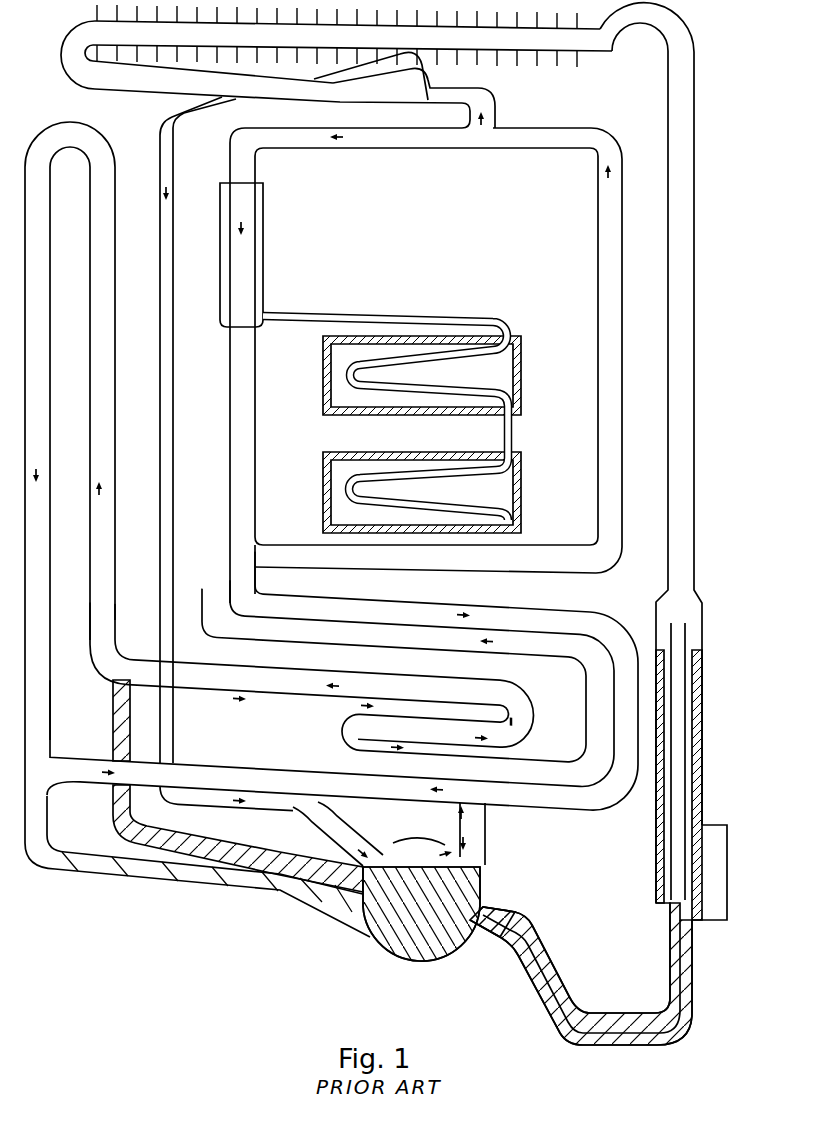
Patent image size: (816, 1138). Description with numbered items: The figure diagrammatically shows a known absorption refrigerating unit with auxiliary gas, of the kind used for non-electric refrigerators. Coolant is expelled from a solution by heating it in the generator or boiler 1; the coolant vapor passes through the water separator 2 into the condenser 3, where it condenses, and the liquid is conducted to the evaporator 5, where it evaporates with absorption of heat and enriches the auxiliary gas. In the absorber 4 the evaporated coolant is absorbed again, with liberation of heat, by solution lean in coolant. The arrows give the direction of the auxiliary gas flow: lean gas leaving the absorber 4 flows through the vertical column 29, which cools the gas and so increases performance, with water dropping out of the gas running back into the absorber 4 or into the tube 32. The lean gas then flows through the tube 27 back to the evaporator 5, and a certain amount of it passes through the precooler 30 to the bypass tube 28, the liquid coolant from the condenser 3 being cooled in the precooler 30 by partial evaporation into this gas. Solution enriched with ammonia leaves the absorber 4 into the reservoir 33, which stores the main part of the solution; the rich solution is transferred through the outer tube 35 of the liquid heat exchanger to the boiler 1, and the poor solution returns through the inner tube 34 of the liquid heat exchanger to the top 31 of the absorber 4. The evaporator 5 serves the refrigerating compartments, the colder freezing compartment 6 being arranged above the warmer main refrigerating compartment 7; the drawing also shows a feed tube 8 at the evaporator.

The generator 1 is at (678, 777).
The water separator 2 is at (686, 148).
The condenser 3 is at (608, 47).
The absorber 4 is at (528, 700).
The evaporator 5 is at (242, 267).
The freezing compartment 6 is at (495, 367).
The main refrigerating compartment 7 is at (495, 493).
The evaporator feed tube 8 is at (265, 310).
The tube 27 is at (610, 195).
The bypass tube 28 is at (167, 257).
The vertical column 29 is at (102, 545).
The precooler 30 is at (458, 103).
The top of the absorber 31 is at (133, 672).
The tube 32 is at (133, 867).
The reservoir 33 is at (445, 885).
The inner tube of the liquid heat exchanger 34 is at (552, 968).
The outer tube of the liquid heat exchanger 35 is at (553, 1005).